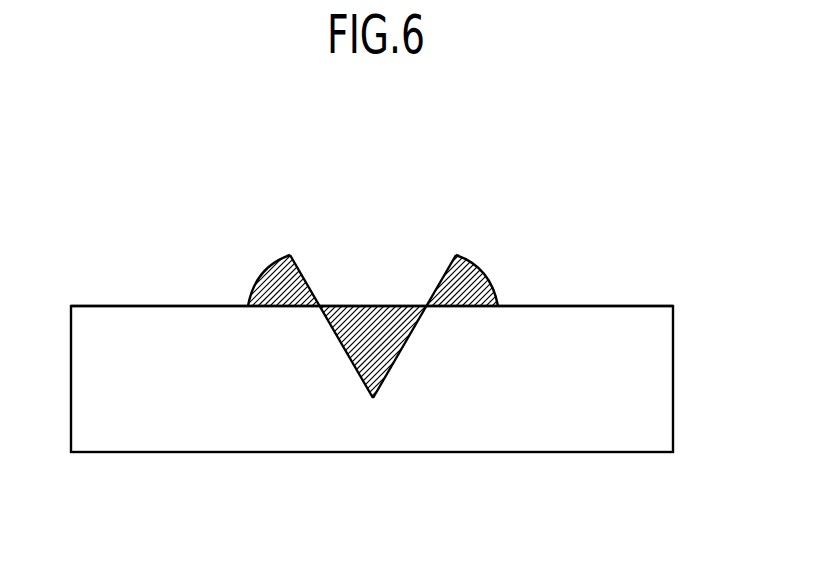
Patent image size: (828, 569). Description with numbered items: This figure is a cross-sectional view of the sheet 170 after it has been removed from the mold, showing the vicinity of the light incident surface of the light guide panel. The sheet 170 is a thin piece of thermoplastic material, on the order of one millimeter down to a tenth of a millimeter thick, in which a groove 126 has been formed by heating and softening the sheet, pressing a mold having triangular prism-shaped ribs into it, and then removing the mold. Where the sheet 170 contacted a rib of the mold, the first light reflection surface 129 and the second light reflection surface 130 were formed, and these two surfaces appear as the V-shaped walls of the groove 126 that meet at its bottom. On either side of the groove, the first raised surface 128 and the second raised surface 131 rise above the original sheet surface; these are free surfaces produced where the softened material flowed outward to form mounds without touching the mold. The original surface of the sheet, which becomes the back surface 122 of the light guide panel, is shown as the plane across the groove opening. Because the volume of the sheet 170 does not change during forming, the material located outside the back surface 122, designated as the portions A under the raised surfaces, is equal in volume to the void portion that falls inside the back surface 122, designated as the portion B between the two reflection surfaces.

The back surface 122 is at (115, 306).
The groove 126 is at (336, 313).
The first raised surface 128 is at (257, 281).
The first light reflection surface 129 is at (355, 358).
The second light reflection surface 130 is at (397, 358).
The second raised surface 131 is at (490, 282).
The sheet 170 is at (159, 425).
The portions outside the surface of the sheet A is at (280, 264).
The void portion inside the back surface B is at (377, 322).